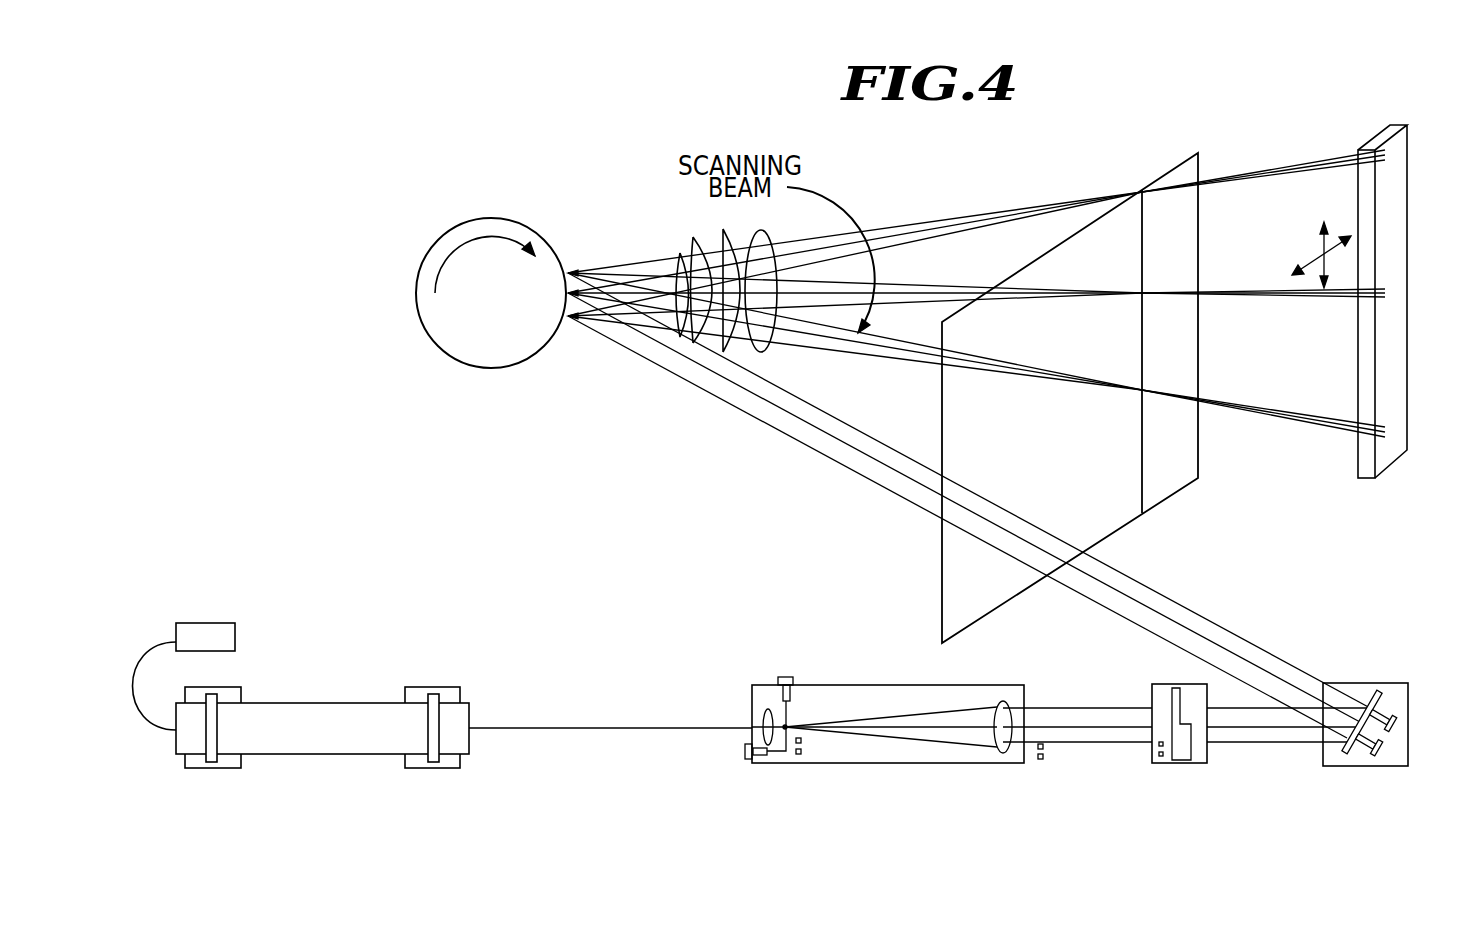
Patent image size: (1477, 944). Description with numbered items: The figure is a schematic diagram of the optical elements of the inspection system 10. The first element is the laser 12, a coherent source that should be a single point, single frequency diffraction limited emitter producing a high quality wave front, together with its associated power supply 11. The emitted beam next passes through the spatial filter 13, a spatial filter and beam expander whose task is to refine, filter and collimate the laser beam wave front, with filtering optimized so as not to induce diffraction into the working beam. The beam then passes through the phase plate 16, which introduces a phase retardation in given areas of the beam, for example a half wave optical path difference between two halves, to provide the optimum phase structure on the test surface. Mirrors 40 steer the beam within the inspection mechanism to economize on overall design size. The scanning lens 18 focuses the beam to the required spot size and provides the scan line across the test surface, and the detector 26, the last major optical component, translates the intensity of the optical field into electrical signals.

The inspection system 10 is at (565, 583).
The power supply 11 is at (235, 640).
The laser 12 is at (367, 757).
The spatial filter 13 is at (918, 765).
The phase plate 16 is at (1200, 764).
The scanning lens 18 is at (693, 236).
The detector 26 is at (1392, 367).
The mirrors 40 is at (1410, 723).